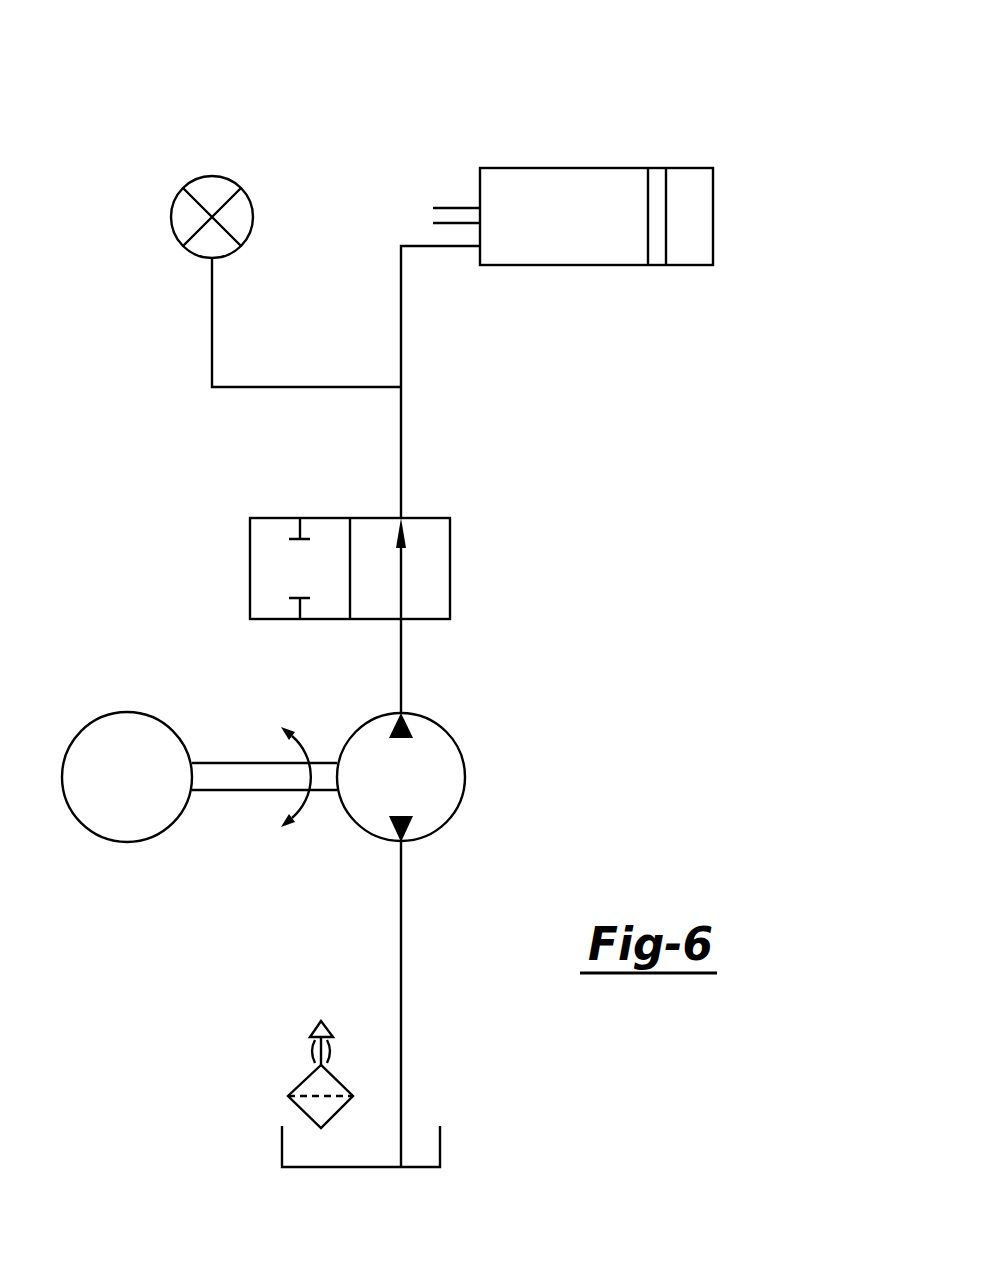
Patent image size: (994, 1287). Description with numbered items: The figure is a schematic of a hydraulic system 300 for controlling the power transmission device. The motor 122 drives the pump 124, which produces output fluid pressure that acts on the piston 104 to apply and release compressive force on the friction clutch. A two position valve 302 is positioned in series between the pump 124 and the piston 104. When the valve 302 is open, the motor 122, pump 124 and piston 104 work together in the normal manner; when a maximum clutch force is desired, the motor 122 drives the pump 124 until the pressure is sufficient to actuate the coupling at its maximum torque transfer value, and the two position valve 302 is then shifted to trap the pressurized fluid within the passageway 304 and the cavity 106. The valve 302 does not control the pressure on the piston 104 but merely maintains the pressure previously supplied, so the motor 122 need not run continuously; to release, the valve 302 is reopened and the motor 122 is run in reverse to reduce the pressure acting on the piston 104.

The hydraulic system 300 is at (722, 135).
The cavity 106 is at (552, 170).
The piston 104 is at (656, 248).
The passageway 304 is at (402, 442).
The two position valve 302 is at (448, 565).
The motor 122 is at (120, 736).
The pump 124 is at (452, 785).